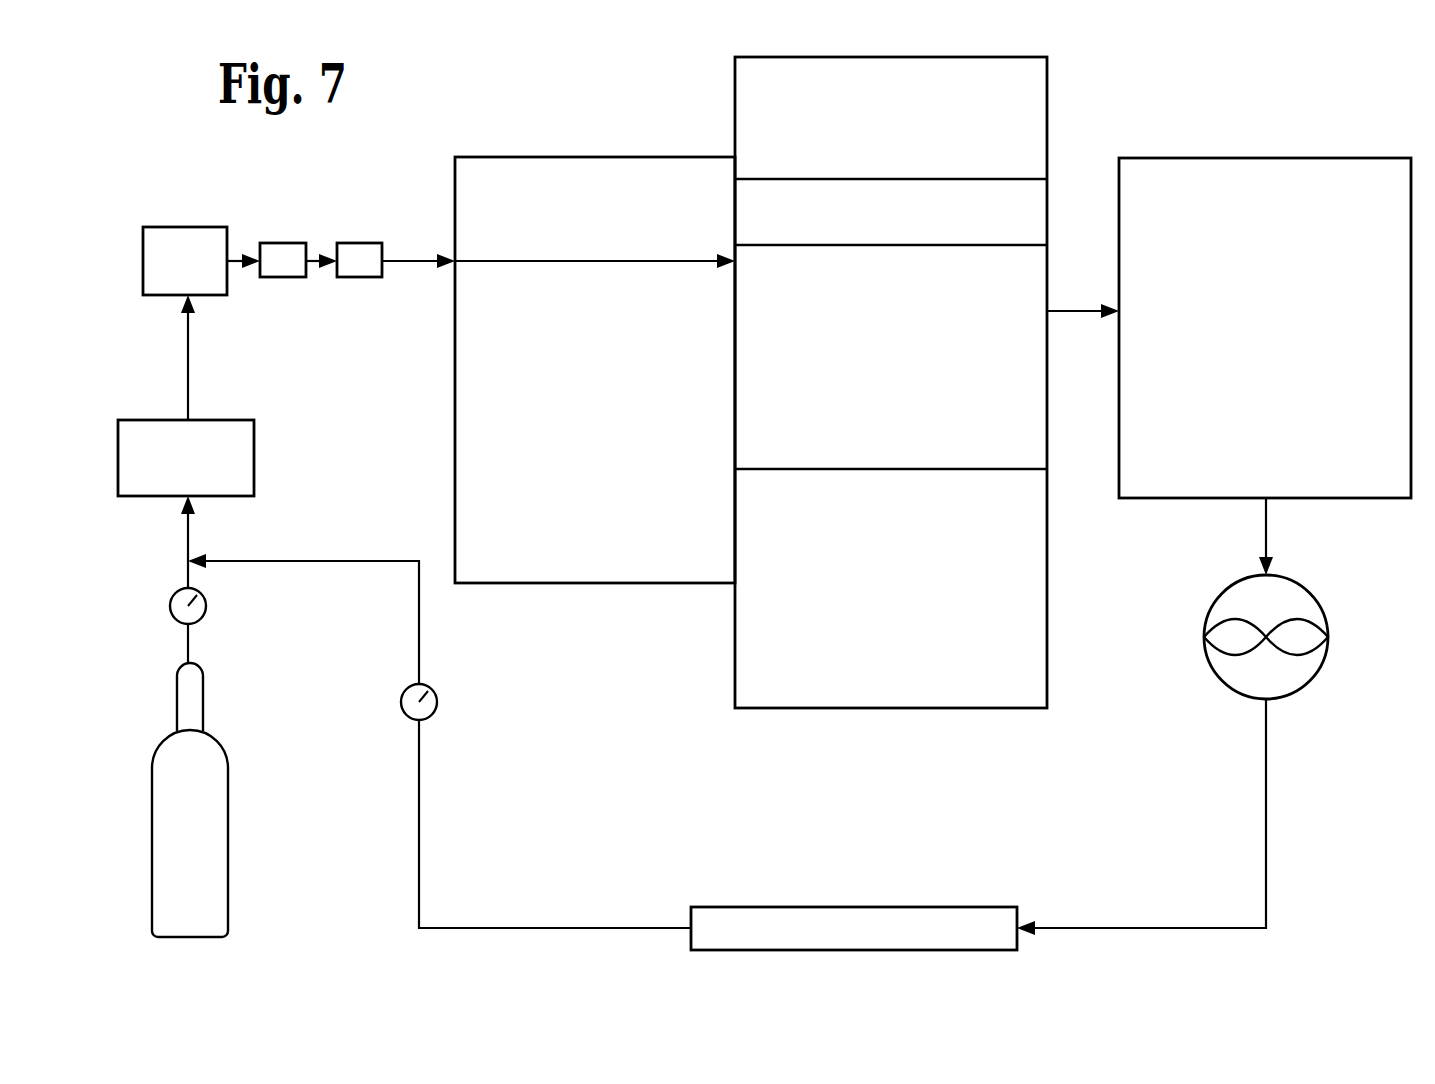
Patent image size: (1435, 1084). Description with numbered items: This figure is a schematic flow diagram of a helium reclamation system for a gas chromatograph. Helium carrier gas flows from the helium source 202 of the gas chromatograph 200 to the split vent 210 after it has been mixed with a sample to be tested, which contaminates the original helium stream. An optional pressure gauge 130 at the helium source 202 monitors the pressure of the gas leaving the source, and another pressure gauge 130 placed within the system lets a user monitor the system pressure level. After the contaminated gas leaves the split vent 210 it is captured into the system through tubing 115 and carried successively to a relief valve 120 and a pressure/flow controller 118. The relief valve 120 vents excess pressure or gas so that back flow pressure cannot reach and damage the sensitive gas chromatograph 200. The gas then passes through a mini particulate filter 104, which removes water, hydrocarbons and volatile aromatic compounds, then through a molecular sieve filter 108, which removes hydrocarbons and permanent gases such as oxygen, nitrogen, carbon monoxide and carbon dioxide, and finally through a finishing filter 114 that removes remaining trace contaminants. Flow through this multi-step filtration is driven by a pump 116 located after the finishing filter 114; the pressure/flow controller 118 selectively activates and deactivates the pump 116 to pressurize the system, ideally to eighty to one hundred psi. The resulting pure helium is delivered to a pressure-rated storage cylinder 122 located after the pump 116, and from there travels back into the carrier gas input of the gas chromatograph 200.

The mini particulate filter 104 is at (645, 155).
The molecular sieve filter 108 is at (1048, 112).
The finishing filter 114 is at (1222, 155).
The tubing 115 is at (233, 258).
The pump 116 is at (1307, 587).
The pressure/flow controller 118 is at (357, 243).
The relief valve 120 is at (280, 278).
The pressure-rated storage cylinder 122 is at (845, 907).
The pressure gauge 130 is at (432, 718).
The gas chromatograph 200 is at (252, 443).
The helium source 202 is at (230, 850).
The split vent 210 is at (168, 225).